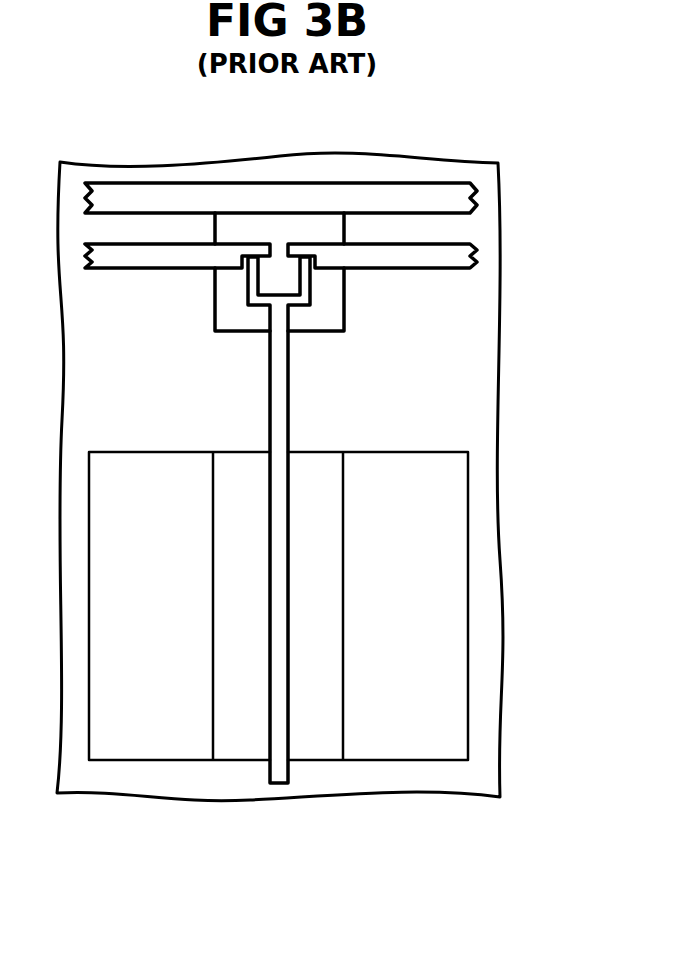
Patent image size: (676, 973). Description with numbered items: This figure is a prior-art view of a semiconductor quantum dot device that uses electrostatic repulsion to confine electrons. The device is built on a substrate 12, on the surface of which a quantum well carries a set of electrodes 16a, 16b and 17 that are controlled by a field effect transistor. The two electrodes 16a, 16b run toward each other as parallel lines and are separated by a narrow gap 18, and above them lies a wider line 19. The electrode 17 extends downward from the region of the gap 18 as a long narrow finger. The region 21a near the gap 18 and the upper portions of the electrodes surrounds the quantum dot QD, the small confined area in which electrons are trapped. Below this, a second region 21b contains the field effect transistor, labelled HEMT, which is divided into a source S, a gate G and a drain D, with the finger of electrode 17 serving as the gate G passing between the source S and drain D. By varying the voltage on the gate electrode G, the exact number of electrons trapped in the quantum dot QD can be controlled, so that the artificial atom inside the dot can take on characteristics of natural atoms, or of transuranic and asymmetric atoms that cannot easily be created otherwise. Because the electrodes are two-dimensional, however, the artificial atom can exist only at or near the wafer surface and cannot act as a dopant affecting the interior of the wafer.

The substrate 12 is at (465, 360).
The electrode 16a is at (122, 256).
The electrode 16b is at (449, 257).
The electrode 17 is at (289, 377).
The gap between side gates 18 is at (286, 238).
The upper electrode line 19 is at (423, 195).
The quantum dot region 21a is at (345, 318).
The HEMT region 21b is at (318, 446).
The quantum dot QD is at (273, 278).
The source S is at (136, 818).
The gate electrode G is at (279, 778).
The drain D is at (445, 725).
The high electron mobility transistor HEMT is at (339, 770).